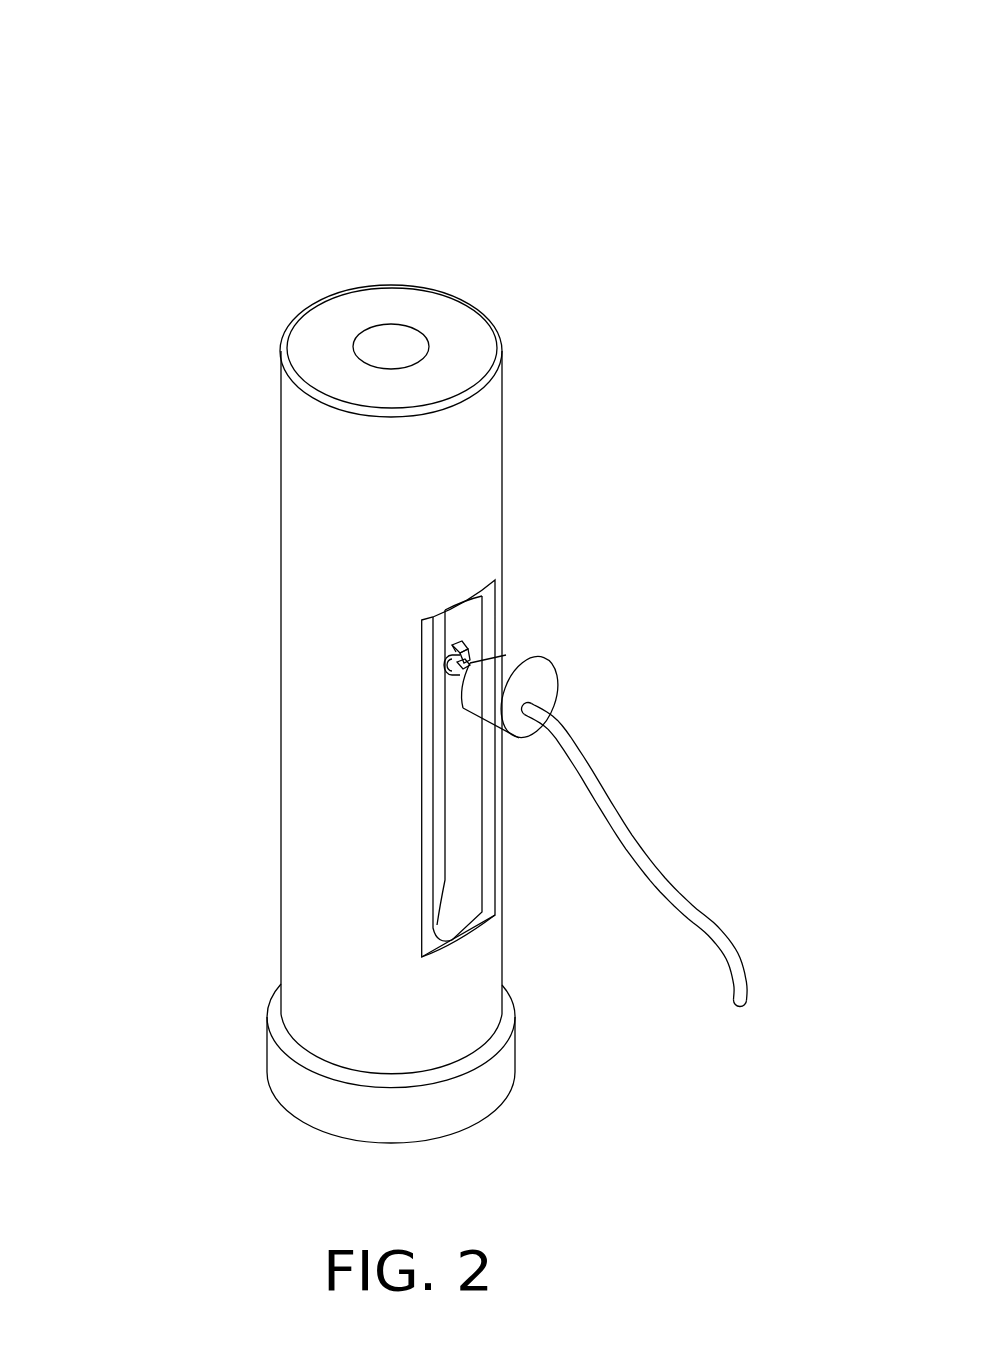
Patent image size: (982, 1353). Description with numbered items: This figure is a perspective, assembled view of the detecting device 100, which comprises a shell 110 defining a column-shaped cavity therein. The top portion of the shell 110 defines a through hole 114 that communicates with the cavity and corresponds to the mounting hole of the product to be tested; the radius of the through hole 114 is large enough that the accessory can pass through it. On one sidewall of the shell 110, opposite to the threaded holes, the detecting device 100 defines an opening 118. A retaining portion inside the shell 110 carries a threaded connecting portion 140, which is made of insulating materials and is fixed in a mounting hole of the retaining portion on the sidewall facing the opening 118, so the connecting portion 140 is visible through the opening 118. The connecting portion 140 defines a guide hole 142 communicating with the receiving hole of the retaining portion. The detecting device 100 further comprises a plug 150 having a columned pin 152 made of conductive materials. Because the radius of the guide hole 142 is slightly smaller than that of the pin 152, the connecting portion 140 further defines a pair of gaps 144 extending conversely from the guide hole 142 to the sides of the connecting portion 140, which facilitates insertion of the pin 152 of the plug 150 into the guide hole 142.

The detecting device 100 is at (420, 34).
The shell 110 is at (330, 757).
The through hole 114 is at (387, 347).
The opening 118 is at (467, 852).
The connecting portion 140 is at (440, 648).
The guide hole 142 is at (462, 650).
The gaps 144 is at (458, 640).
The plug 150 is at (502, 685).
The pin 152 is at (462, 662).